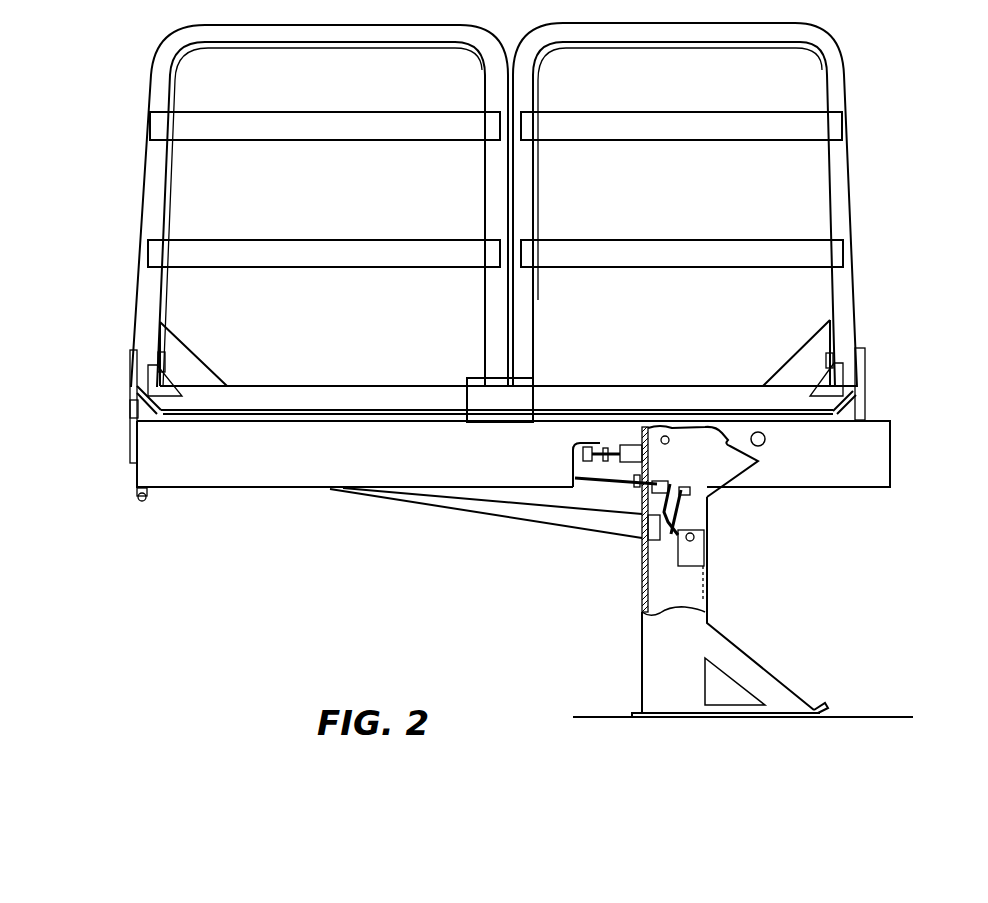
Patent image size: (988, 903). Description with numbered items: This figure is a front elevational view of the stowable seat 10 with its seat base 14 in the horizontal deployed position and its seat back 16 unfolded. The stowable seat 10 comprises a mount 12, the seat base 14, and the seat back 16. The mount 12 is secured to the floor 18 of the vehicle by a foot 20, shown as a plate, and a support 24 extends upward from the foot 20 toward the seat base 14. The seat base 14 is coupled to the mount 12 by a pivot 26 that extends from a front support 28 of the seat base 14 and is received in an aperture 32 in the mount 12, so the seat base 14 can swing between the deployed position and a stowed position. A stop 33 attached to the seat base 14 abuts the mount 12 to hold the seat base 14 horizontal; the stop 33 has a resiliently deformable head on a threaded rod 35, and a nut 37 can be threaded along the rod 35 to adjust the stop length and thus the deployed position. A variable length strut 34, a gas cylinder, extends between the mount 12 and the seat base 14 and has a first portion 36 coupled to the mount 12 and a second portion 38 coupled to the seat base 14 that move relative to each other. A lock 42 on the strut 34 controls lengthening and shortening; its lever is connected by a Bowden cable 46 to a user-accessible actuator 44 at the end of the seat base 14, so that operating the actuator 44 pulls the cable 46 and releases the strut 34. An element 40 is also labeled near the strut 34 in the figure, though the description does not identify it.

The stowable seat 10 is at (160, 686).
The mount 12 is at (612, 698).
The seat base 14 is at (114, 479).
The seat back 16 is at (100, 322).
The floor 18 is at (851, 717).
The foot 20 is at (745, 720).
The support 24 is at (708, 643).
The pivot 26 is at (764, 447).
The front support 28 is at (236, 469).
The aperture 32 is at (724, 441).
The stop 33 is at (626, 428).
The variable length strut 34 is at (418, 503).
The threaded rod 35 is at (577, 443).
The strut portion 36 is at (652, 556).
The nut 37 is at (590, 444).
The strut portion 38 is at (484, 502).
The latch block 40 is at (703, 545).
The lock 42 is at (695, 480).
The actuator 44 is at (144, 501).
The Bowden cable 46 is at (623, 482).